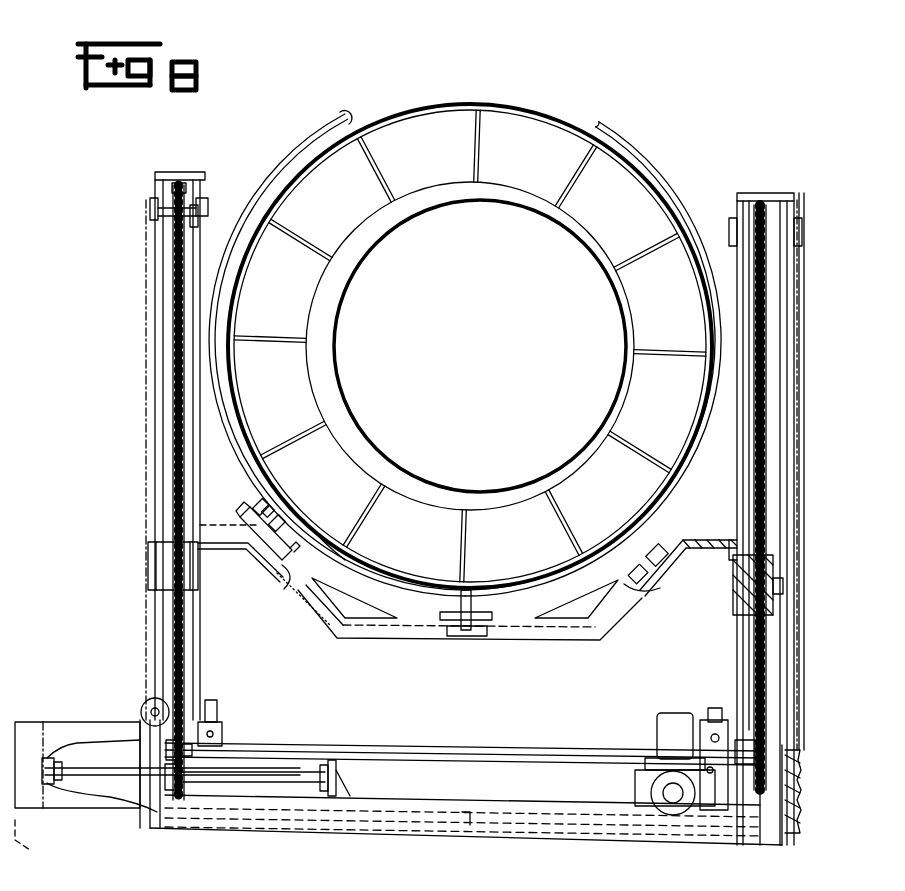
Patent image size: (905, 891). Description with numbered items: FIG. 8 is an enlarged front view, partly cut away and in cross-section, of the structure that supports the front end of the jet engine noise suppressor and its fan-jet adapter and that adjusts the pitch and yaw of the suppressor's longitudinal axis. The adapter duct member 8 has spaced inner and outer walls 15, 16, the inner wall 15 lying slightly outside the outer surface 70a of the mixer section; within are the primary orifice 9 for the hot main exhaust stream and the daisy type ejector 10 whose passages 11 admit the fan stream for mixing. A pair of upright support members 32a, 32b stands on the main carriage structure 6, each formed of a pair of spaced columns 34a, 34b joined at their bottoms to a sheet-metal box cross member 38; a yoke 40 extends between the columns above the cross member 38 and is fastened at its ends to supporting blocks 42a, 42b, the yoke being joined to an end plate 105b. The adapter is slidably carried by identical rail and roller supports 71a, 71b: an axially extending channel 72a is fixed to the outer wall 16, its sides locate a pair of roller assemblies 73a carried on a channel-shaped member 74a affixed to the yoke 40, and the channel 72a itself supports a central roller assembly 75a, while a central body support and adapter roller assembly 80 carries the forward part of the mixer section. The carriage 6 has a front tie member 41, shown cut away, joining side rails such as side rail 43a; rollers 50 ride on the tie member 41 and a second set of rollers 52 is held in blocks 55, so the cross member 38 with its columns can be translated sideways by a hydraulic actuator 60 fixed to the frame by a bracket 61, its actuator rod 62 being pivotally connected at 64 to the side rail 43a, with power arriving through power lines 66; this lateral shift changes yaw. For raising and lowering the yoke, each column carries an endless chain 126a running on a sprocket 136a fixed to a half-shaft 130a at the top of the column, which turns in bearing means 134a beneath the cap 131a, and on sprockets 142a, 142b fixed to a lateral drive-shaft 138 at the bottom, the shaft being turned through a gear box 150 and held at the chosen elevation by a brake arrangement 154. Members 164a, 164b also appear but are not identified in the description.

The main support or carriage structure 6 is at (548, 840).
The adapter duct member 8 is at (640, 138).
The primary orifice 9 is at (605, 287).
The daisy type ejector 10 is at (540, 240).
The passages 11 is at (430, 172).
The inner wall 15 is at (344, 112).
The outer wall 16 is at (326, 141).
The upright support member 32a is at (148, 200).
The upright support member 32b is at (736, 206).
The spaced columns 34a is at (174, 432).
The spaced columns 34b is at (755, 290).
The cross member 38 is at (380, 836).
The yoke 40 is at (395, 648).
The front tie member 41 is at (112, 815).
The supporting block 42a is at (147, 576).
The supporting block 42b is at (733, 612).
The side rail 43a is at (74, 793).
The rollers 50 is at (141, 706).
The rollers 52 is at (224, 726).
The block 55 is at (218, 702).
The hydraulic actuator 60 is at (240, 780).
The bracket 61 is at (342, 772).
The actuator rod 62 is at (90, 770).
The pivotal connection 64 is at (52, 788).
The power lines 66 is at (468, 826).
The outer surface of the mixer section 70a is at (368, 566).
The support 71a is at (250, 508).
The support 71b is at (680, 522).
The channel 72a is at (300, 516).
The roller assemblies 73a is at (248, 516).
The channel-shaped member 74a is at (287, 584).
The roller assembly 75a is at (262, 556).
The central body support and adapter roller assembly 80 is at (455, 655).
The end plate 105b is at (734, 586).
The endless chain 126a is at (205, 197).
The half-shaft 130a is at (200, 235).
The cap 131a is at (180, 183).
The bearing means 134a is at (198, 210).
The sprocket 136a is at (176, 228).
The drive-shaft 138 is at (410, 744).
The sprocket 142a is at (192, 748).
The sprocket 142b is at (730, 825).
The gear box 150 is at (648, 758).
The brake arrangement 154 is at (662, 794).
The left strut 164a is at (146, 482).
The right strut 164b is at (808, 176).